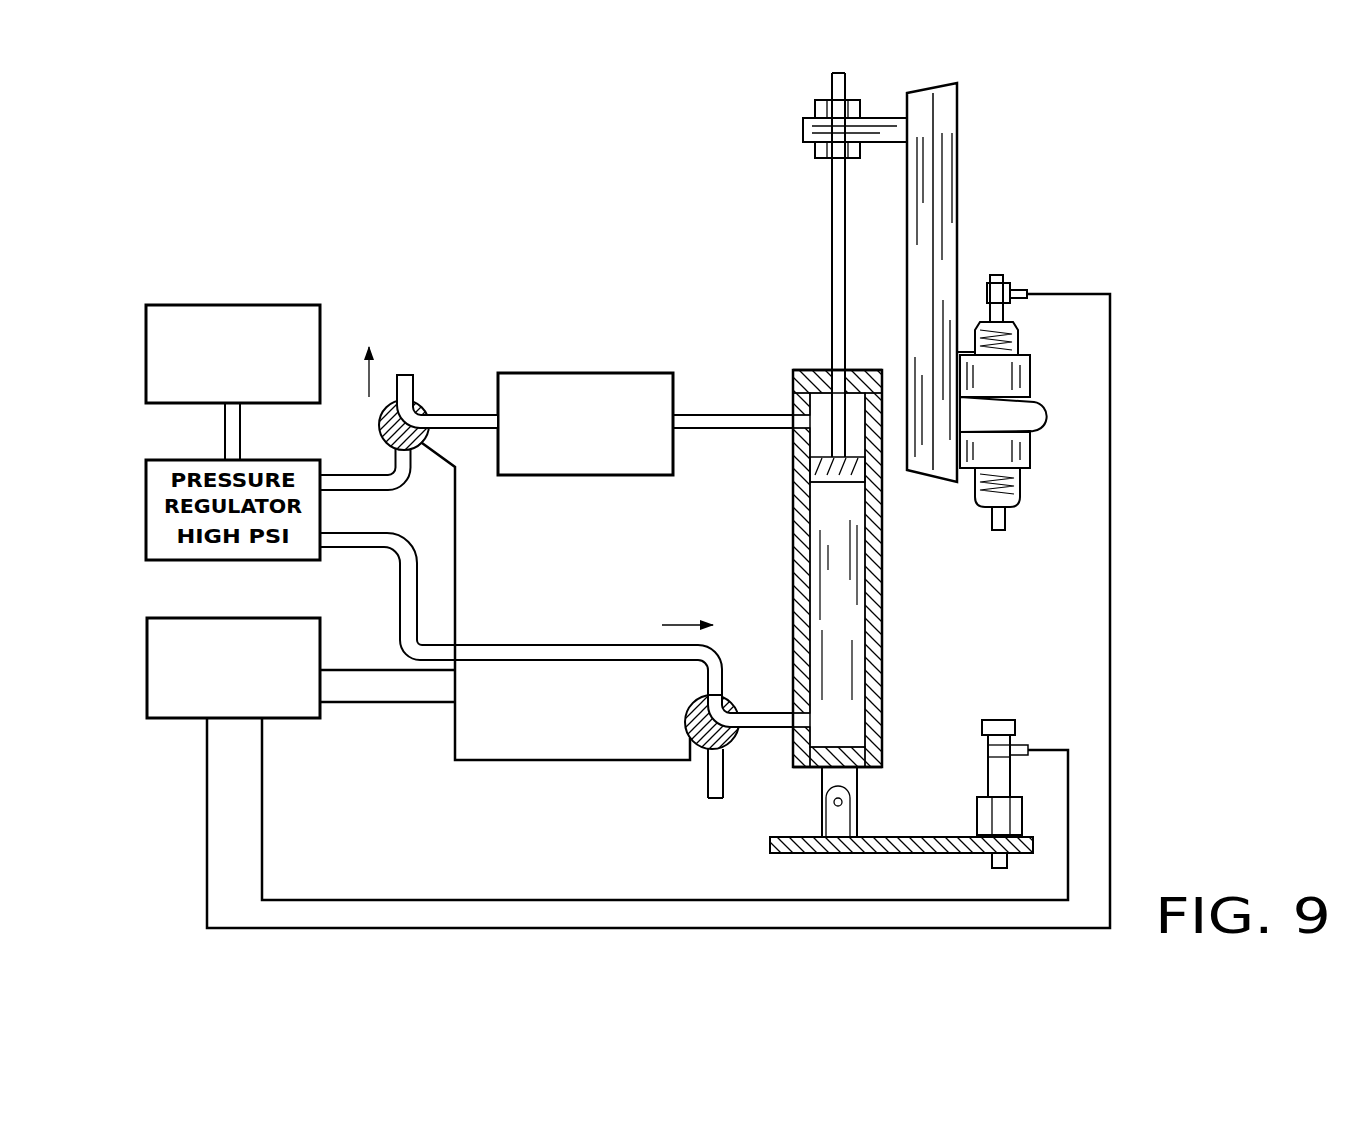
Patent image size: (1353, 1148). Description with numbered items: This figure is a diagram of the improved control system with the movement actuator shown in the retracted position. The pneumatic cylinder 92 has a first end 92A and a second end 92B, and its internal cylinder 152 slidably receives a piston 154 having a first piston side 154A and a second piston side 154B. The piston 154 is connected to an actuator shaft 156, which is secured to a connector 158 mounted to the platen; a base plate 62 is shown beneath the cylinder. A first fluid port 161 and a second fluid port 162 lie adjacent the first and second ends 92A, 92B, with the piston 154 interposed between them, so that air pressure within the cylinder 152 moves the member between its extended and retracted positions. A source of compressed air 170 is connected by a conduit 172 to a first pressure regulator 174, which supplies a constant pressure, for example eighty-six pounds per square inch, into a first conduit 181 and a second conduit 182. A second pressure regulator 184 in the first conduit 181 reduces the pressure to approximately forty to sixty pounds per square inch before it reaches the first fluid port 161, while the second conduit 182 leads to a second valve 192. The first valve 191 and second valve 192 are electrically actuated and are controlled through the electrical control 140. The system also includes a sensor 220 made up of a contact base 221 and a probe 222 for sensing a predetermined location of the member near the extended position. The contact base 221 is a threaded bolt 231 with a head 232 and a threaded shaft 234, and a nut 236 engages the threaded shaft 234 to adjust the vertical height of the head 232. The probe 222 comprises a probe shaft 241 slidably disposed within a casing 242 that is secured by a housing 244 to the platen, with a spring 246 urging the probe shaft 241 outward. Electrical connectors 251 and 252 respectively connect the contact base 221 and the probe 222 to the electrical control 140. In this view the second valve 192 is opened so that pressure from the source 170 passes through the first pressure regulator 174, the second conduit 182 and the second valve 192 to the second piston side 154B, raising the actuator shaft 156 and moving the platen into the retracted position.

The base plate 62 is at (770, 853).
The pneumatic cylinder 92 is at (795, 593).
The first end 92A is at (808, 370).
The second end 92B is at (880, 718).
The electrical control 140 is at (197, 618).
The internal cylinder 152 is at (822, 640).
The piston 154 is at (815, 482).
The first piston side 154A is at (810, 458).
The second piston side 154B is at (818, 500).
The actuator shaft 156 is at (828, 183).
The connector 158 is at (893, 140).
The first fluid port 161 is at (793, 420).
The second fluid port 162 is at (797, 727).
The source of compressed air 170 is at (323, 333).
The conduit 172 is at (225, 445).
The first pressure regulator 174 is at (240, 457).
The first conduit 181 is at (468, 430).
The second conduit 182 is at (482, 633).
The second pressure regulator 184 is at (535, 373).
The first valve 191 is at (412, 402).
The second valve 192 is at (690, 718).
The sensor 220 is at (1128, 628).
The contact base 221 is at (1121, 742).
The probe 222 is at (1124, 441).
The threaded bolt 231 is at (988, 773).
The head 232 is at (997, 720).
The threaded shaft 234 is at (992, 865).
The nut 236 is at (977, 817).
The probe shaft 241 is at (993, 532).
The casing 242 is at (1018, 507).
The housing 244 is at (1017, 418).
The spring 246 is at (973, 495).
The electrical connector 251 is at (458, 673).
The electrical connector 252 is at (462, 758).